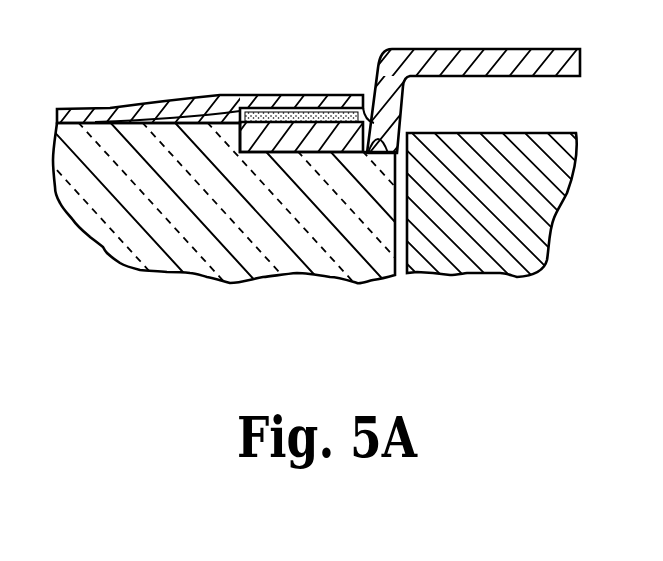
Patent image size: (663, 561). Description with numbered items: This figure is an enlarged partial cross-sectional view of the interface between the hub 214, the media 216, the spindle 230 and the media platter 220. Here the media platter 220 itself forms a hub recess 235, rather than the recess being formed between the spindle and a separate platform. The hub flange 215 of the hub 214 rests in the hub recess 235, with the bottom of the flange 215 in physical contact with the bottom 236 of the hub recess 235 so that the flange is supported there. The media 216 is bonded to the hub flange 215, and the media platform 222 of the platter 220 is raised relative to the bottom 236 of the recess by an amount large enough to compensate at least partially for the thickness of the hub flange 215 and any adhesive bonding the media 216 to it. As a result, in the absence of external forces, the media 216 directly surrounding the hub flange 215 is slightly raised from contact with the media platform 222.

The hub 214 is at (497, 63).
The hub flange 215 is at (277, 140).
The media 216 is at (220, 103).
The media platter 220 is at (167, 297).
The media platform 222 is at (197, 119).
The spindle 230 is at (490, 243).
The hub recess 235 is at (318, 166).
The bottom of the hub recess 236 is at (376, 118).